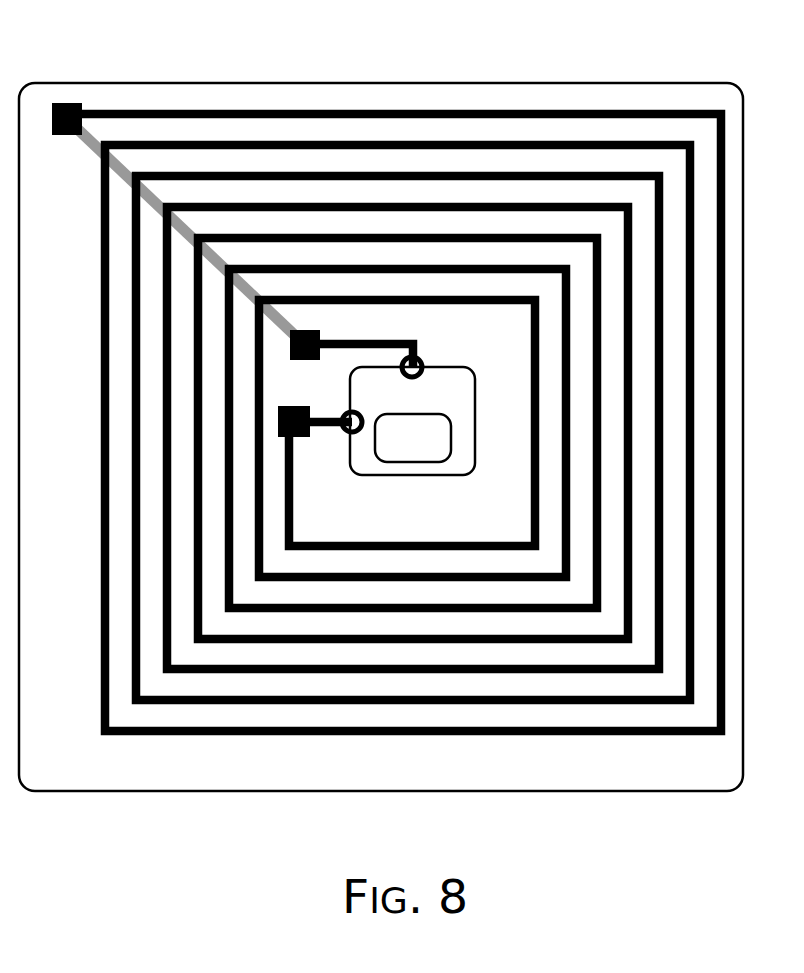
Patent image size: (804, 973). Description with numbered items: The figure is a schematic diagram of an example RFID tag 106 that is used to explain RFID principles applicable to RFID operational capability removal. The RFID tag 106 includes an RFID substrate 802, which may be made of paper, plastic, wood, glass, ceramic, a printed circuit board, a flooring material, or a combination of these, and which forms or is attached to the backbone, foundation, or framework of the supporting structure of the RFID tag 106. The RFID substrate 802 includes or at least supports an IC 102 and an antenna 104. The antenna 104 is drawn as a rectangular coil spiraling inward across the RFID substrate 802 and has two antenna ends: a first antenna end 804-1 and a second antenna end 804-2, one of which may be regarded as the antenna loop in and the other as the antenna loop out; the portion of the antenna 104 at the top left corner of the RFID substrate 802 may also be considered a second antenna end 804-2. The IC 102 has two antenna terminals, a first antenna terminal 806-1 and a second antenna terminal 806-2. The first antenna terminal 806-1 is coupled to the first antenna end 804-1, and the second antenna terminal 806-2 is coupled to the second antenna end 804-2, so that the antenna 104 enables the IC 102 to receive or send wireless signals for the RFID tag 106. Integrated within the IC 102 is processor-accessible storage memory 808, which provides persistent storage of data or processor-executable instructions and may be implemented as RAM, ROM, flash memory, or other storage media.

The RFID tag 106 is at (160, 47).
The RFID substrate 802 is at (497, 776).
The antenna 104 is at (102, 533).
The second antenna end 804-2 is at (321, 334).
The first antenna end 804-1 is at (295, 437).
The IC 102 is at (412, 421).
The storage memory 808 is at (428, 448).
The second antenna terminal 806-2 is at (421, 361).
The first antenna terminal 806-1 is at (348, 411).